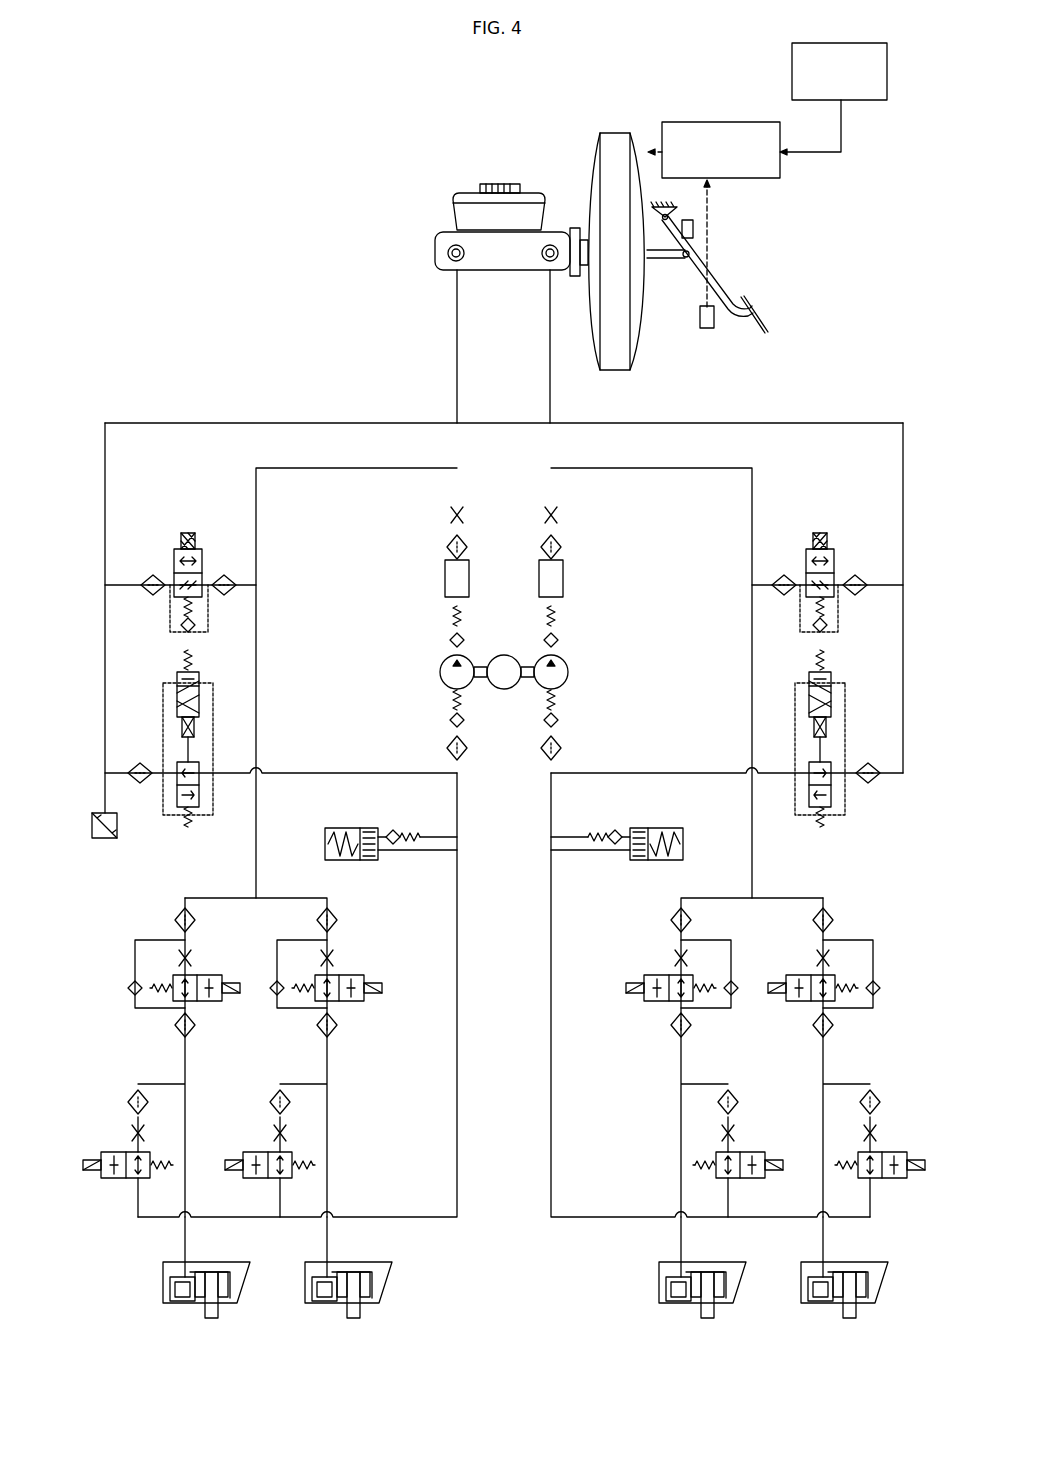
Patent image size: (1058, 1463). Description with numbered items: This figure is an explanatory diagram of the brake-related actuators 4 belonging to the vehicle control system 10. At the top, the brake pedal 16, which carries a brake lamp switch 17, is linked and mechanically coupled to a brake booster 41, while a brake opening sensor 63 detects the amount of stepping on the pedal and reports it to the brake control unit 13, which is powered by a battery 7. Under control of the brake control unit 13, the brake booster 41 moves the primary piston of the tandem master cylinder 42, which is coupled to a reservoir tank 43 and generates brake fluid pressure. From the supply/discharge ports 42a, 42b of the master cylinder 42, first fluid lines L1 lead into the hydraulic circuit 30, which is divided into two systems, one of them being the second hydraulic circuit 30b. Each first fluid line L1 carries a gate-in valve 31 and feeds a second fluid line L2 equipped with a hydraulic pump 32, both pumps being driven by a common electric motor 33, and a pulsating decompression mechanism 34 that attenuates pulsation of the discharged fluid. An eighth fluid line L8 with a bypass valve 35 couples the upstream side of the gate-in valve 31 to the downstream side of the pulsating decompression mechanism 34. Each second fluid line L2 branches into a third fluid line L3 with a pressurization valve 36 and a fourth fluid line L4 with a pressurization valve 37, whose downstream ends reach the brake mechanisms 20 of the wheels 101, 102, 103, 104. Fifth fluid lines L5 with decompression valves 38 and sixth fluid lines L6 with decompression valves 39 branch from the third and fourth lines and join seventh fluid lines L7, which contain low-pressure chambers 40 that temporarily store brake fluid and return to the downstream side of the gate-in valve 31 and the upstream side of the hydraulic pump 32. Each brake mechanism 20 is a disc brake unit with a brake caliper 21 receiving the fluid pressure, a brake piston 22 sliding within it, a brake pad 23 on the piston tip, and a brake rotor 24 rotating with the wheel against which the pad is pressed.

The vehicle control system 10 is at (210, 107).
The brake-related actuators 4 is at (218, 221).
The battery 7 is at (887, 63).
The brake control unit 13 is at (690, 122).
The brake pedal 16 is at (743, 307).
The brake lamp switch 17 is at (693, 228).
The brake opening sensor 63 is at (707, 330).
The brake mechanism 20 is at (154, 1260).
The brake caliper 21 is at (167, 1292).
The brake piston 22 is at (175, 1304).
The brake pad 23 is at (200, 1303).
The brake rotor 24 is at (210, 1319).
The hydraulic circuit 30 is at (148, 402).
The second hydraulic circuit 30b is at (104, 630).
The gate-in valve 31 is at (185, 815).
The hydraulic pump 32 is at (440, 670).
The electric motor 33 is at (504, 690).
The pulsating decompression mechanism 34 is at (440, 575).
The bypass valve 35 is at (191, 532).
The pressurization valve 36 is at (365, 975).
The pressurization valve 37 is at (210, 975).
The decompression valve 38 is at (272, 1151).
The decompression valve 39 is at (109, 1146).
The low-pressure chamber 40 is at (345, 862).
The brake booster 41 is at (612, 133).
The master cylinder 42 is at (436, 253).
The supply/discharge port 42a is at (548, 274).
The supply/discharge port 42b is at (452, 271).
The reservoir tank 43 is at (453, 215).
The wheel 101 is at (710, 1246).
The wheel 102 is at (861, 1246).
The wheel 103 is at (216, 1246).
The wheel 104 is at (368, 1246).
The first fluid line L1 is at (460, 335).
The second fluid line L2 is at (390, 468).
The third fluid line L3 is at (327, 1195).
The fourth fluid line L4 is at (185, 1195).
The fifth fluid line L5 is at (291, 1084).
The sixth fluid line L6 is at (153, 1084).
The seventh fluid line L7 is at (460, 1030).
The eighth fluid line L8 is at (128, 583).